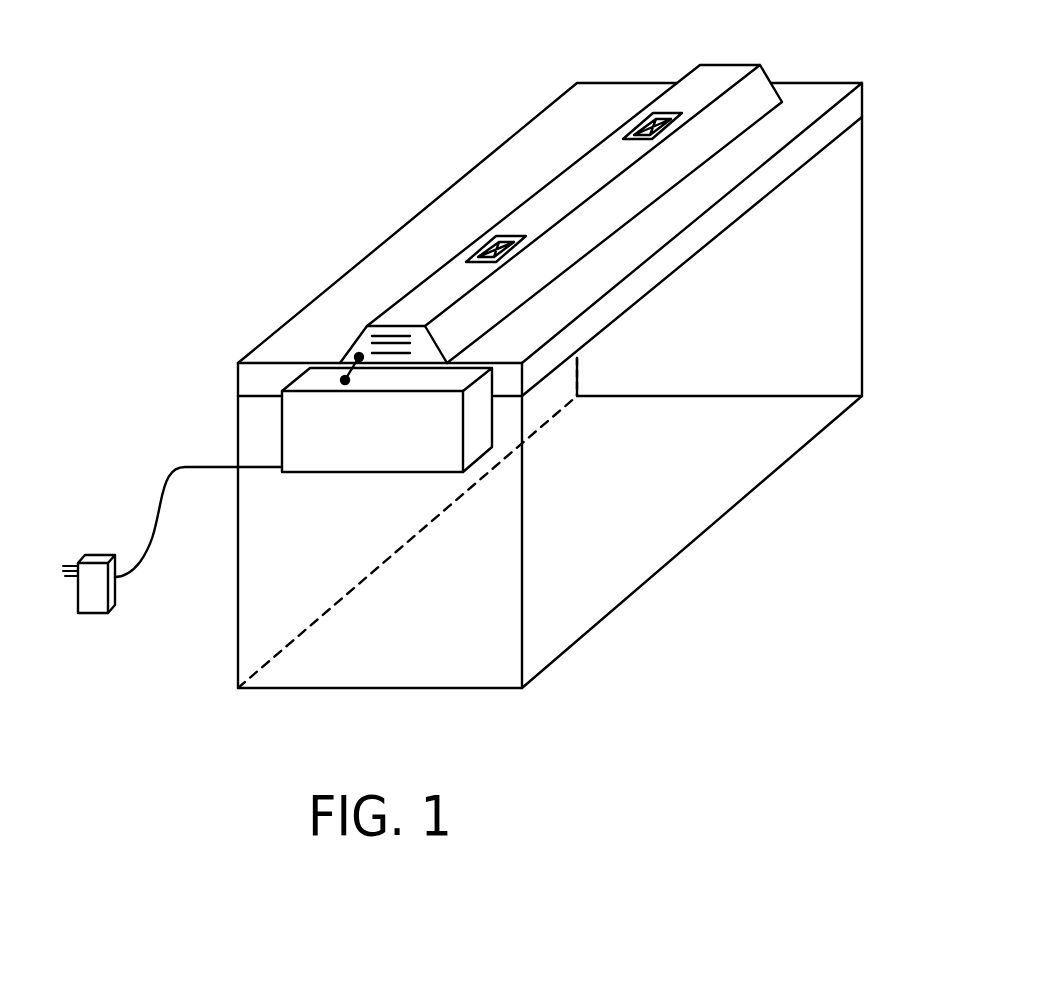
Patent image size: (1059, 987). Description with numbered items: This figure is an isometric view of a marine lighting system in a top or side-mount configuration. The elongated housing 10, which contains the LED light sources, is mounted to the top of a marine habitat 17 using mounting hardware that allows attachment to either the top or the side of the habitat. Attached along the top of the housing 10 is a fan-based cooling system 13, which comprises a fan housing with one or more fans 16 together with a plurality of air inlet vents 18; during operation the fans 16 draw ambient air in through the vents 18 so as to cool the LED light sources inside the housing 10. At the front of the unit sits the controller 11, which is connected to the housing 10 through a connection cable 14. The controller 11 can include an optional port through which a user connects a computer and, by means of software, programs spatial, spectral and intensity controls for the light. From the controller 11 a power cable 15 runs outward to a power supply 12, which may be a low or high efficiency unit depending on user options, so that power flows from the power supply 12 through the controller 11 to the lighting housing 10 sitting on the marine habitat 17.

The housing 10 is at (478, 198).
The controller 11 is at (373, 447).
The power supply 12 is at (90, 578).
The fan-based cooling system 13 is at (607, 175).
The connection cable 14 is at (348, 364).
The power cable 15 is at (185, 465).
The fans 16 is at (476, 252).
The marine habitat 17 is at (690, 502).
The air inlet vents 18 is at (393, 338).